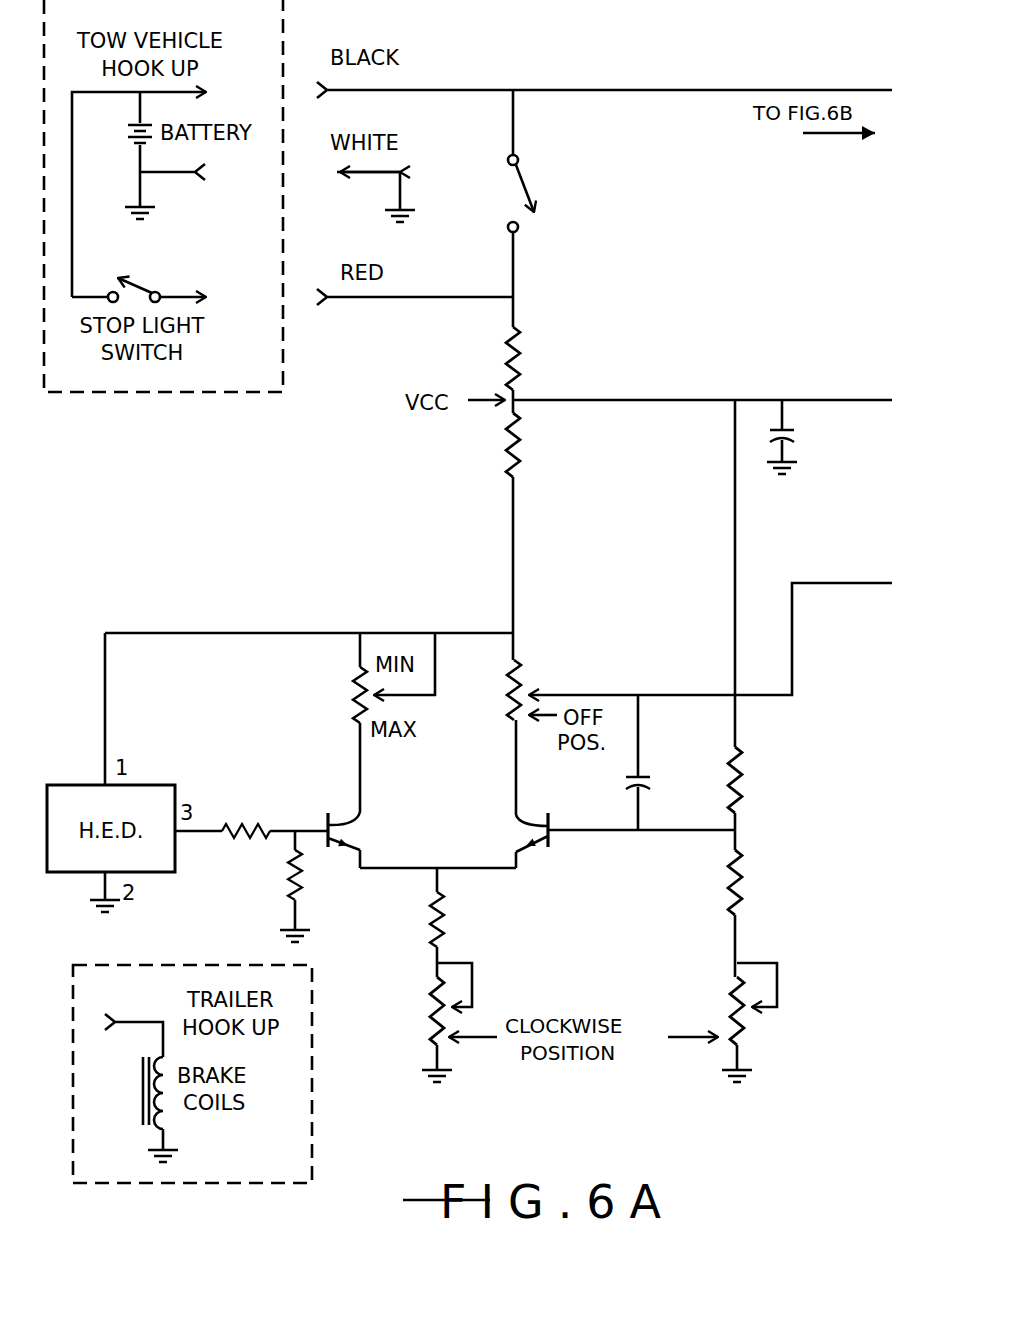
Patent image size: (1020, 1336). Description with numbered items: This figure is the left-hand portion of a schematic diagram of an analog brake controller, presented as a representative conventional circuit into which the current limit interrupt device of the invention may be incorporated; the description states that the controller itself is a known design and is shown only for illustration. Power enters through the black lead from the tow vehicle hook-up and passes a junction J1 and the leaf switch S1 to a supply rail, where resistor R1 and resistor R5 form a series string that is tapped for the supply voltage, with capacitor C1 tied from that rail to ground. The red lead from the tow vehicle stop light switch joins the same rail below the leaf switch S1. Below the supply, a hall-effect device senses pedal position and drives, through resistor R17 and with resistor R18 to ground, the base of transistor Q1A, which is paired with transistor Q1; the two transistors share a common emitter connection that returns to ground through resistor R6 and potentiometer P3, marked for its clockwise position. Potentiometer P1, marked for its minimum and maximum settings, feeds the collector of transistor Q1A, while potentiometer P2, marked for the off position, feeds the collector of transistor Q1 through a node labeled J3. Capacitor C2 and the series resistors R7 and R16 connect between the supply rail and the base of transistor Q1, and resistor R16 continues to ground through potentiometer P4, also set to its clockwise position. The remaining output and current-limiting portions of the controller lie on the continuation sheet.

The jumper J1 is at (533, 122).
The leaf switch S1 is at (570, 196).
The resistor R1 is at (529, 358).
The resistor R5 is at (529, 445).
The capacitor C1 is at (797, 437).
The potentiometer P1 (min/max) P1 is at (374, 678).
The potentiometer P2 (off position) P2 is at (494, 690).
The jumper J3 is at (530, 767).
The transistor Q1 is at (500, 828).
The transistor Q1A is at (400, 830).
The capacitor C2 is at (655, 762).
The resistor R7 is at (755, 780).
The resistor R16 is at (762, 882).
The resistor R17 is at (246, 847).
The resistor R18 is at (315, 886).
The resistor R6 is at (452, 907).
The potentiometer P3 (clockwise position) P3 is at (432, 1022).
The potentiometer P4 (clockwise position) P4 is at (735, 1022).